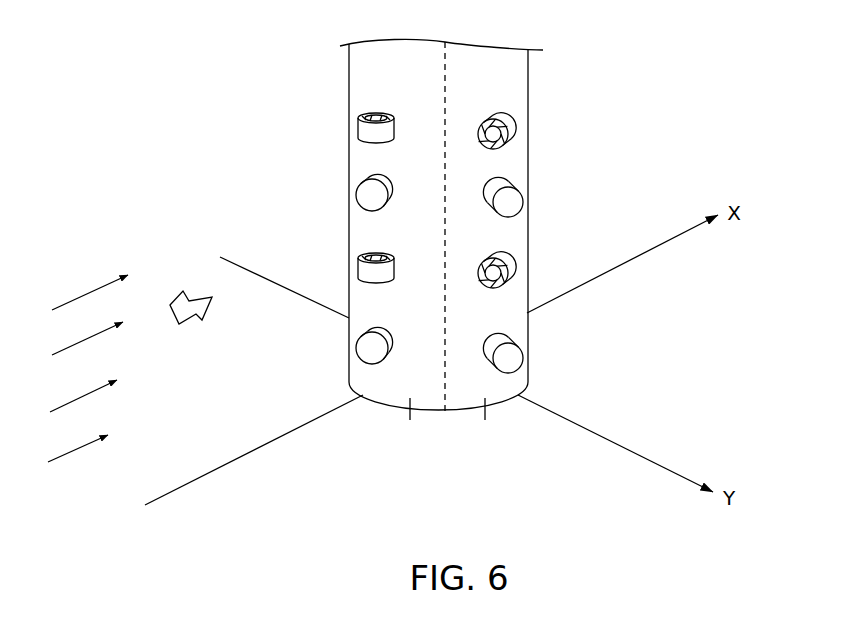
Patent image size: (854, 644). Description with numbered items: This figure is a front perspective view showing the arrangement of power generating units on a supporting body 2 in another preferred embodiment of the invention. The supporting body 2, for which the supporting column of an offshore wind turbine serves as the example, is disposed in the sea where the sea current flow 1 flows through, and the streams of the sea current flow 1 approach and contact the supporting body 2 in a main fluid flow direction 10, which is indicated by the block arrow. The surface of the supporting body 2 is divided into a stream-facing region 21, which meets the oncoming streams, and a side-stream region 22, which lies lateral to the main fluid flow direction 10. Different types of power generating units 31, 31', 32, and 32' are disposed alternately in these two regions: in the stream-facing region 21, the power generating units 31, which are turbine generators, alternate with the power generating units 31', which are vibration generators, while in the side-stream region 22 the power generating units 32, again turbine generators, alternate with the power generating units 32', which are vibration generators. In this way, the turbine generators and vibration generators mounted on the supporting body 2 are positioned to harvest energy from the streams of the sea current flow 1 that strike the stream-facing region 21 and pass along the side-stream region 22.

The sea current flow 1 is at (78, 298).
The main fluid flow direction 10 is at (191, 296).
The supporting body 2 is at (357, 66).
The stream-facing region 21 is at (407, 424).
The side-stream region 22 is at (483, 424).
The power generating unit 31 is at (351, 186).
The power generating unit 31' is at (351, 257).
The power generating unit 32 is at (522, 189).
The power generating unit 32' is at (529, 269).